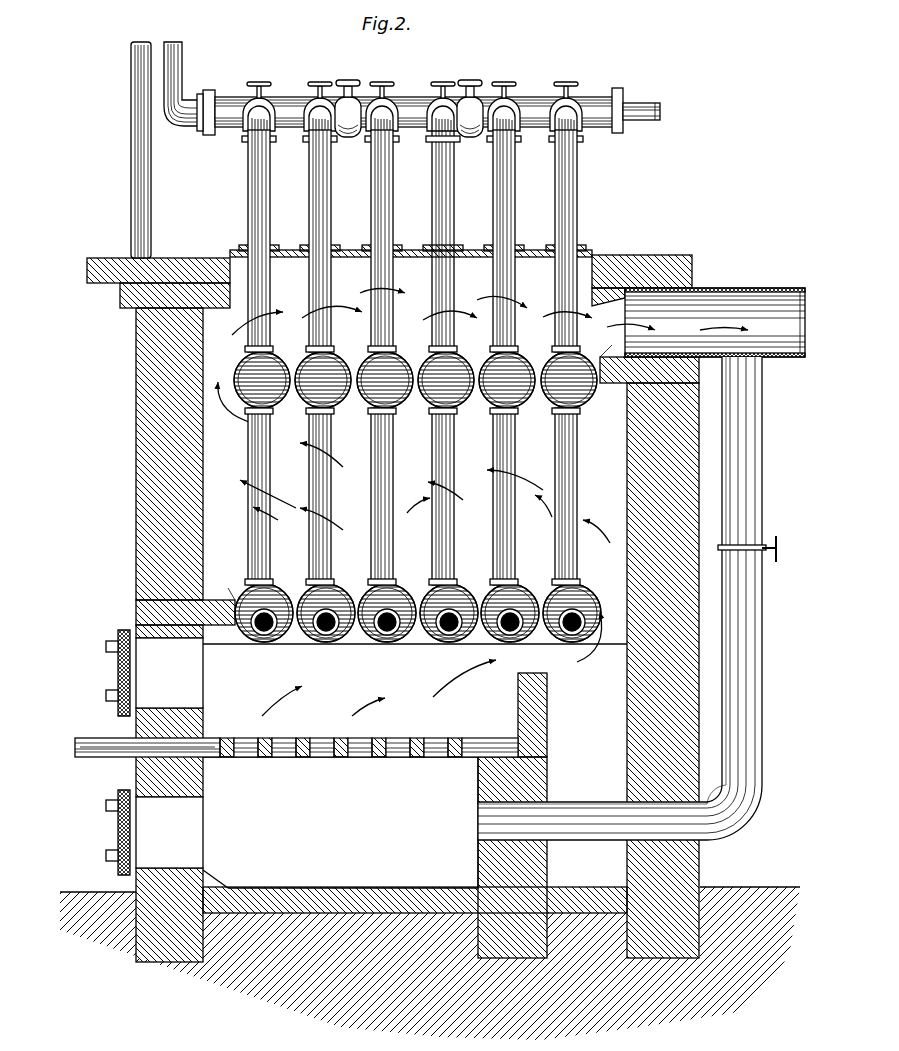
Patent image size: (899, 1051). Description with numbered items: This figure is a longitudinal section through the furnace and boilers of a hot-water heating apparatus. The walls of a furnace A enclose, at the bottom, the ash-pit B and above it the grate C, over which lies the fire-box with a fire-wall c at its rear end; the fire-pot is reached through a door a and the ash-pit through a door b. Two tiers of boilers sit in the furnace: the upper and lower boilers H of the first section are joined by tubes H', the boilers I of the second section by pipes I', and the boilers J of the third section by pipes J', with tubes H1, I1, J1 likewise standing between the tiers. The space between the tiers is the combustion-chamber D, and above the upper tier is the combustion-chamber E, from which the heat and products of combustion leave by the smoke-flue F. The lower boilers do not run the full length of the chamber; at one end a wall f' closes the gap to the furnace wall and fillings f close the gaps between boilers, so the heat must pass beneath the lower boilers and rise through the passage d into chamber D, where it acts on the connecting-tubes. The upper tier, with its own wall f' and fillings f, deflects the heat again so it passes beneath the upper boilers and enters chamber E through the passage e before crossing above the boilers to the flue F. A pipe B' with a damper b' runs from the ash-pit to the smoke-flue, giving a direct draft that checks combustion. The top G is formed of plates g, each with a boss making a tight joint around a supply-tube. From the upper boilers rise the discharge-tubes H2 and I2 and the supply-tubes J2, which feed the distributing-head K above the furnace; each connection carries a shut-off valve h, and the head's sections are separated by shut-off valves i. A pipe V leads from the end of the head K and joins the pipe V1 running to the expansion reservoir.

The walls of a furnace A is at (185, 515).
The ash-pit B is at (375, 857).
The grate C is at (415, 685).
The combustion-chamber D is at (425, 493).
The combustion-chamber E is at (412, 312).
The smoke-flue F is at (706, 322).
The top G is at (411, 238).
The plates g is at (421, 238).
The distributing-head K is at (437, 103).
The shut-off valve h is at (412, 80).
The shut-off valve i is at (409, 97).
The pipe or tube V is at (200, 122).
The pipe V1 is at (186, 84).
The discharge-tube I2 is at (440, 196).
The supply-tubes J2 is at (318, 215).
The discharge-tube H2 is at (565, 196).
The pipes J' is at (292, 393).
The pipes I' is at (415, 392).
The tubes H' is at (538, 390).
The middle tubes J J1 is at (315, 488).
The middle tubes I I1 is at (436, 478).
The middle tubes H H1 is at (562, 479).
The upper and lower boilers of the third section J is at (295, 593).
The upper and lower boilers of the second section I is at (418, 591).
The upper and lower boilers of the first section H is at (541, 590).
The filling f is at (412, 465).
The wall or partition f' is at (421, 466).
The passage e is at (236, 394).
The passage d is at (600, 626).
The pipe B' is at (630, 598).
The damper b' is at (758, 549).
The door a is at (154, 673).
The door b is at (154, 832).
The fire-wall c is at (532, 715).